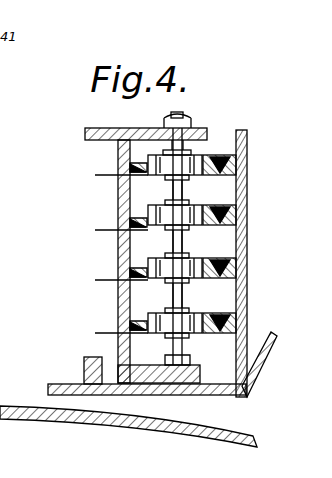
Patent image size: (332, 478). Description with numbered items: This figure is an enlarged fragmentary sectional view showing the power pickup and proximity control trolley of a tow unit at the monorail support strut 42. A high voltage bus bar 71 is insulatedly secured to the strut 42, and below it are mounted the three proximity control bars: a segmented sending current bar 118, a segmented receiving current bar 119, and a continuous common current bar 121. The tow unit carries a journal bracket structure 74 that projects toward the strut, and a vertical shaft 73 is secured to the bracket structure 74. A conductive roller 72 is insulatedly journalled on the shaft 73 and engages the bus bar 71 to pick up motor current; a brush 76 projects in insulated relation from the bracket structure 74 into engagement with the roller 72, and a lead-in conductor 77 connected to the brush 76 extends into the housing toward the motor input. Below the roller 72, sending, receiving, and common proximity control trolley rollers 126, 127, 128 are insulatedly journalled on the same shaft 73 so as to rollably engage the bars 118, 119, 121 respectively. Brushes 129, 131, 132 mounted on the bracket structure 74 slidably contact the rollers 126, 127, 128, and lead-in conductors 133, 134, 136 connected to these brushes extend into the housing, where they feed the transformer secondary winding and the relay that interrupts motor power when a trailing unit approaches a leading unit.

The support strut 42 is at (248, 217).
The high voltage bus bar 71 is at (210, 163).
The conductive roller 72 is at (165, 156).
The vertical shaft 73 is at (184, 132).
The journal bracket structure 74 is at (112, 169).
The brush 76 is at (165, 177).
The lead-in conductor 77 is at (102, 175).
The segmented sending current bar 118 is at (208, 212).
The segmented receiving current bar 119 is at (207, 264).
The continuous common current bar 121 is at (206, 318).
The sending proximity control trolley roller 126 is at (192, 212).
The receiving proximity control trolley roller 127 is at (187, 258).
The common proximity control trolley roller 128 is at (185, 310).
The brush 129 is at (166, 230).
The brush 131 is at (166, 283).
The brush 132 is at (168, 338).
The lead-in conductor 133 is at (102, 230).
The lead-in conductor 134 is at (102, 280).
The lead-in conductor 136 is at (100, 333).